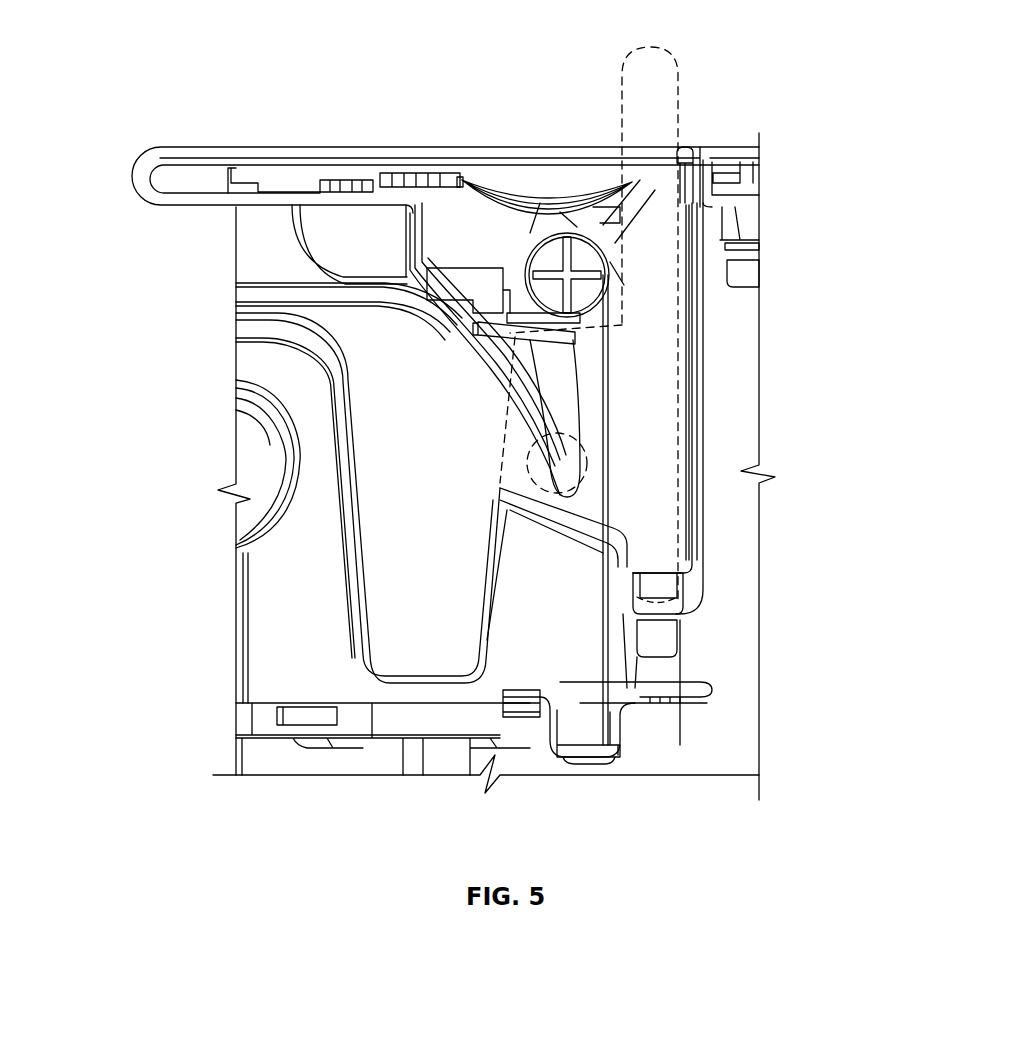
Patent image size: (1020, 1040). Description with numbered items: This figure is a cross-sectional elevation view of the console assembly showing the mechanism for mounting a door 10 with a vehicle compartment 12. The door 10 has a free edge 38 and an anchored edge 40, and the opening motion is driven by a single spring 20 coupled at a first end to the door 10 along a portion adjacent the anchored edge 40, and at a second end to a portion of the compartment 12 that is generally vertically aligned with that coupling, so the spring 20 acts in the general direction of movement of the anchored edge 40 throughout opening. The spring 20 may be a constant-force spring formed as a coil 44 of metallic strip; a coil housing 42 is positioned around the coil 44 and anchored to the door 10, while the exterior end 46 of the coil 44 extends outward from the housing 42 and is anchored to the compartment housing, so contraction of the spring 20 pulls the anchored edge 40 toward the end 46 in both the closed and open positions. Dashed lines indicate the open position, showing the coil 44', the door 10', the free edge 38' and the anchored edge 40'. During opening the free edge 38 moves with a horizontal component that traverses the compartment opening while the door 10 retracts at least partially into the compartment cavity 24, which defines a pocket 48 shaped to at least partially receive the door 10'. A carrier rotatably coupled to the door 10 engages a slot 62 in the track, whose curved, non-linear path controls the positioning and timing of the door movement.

The door 10 is at (459, 145).
The door in open position 10' is at (748, 382).
The vehicle compartment 12 is at (378, 363).
The spring 20 is at (630, 400).
The compartment cavity 24 is at (388, 340).
The free edge 38 is at (407, 181).
The free edge in open position 38' is at (594, 306).
The anchored edge 40 is at (718, 185).
The anchored edge in open position 40' is at (722, 659).
The coil housing 42 is at (575, 340).
The coil 44 is at (556, 214).
The coil in open position 44' is at (557, 488).
The spring end 46 is at (587, 763).
The pocket 48 is at (705, 560).
The slot 62 is at (567, 393).